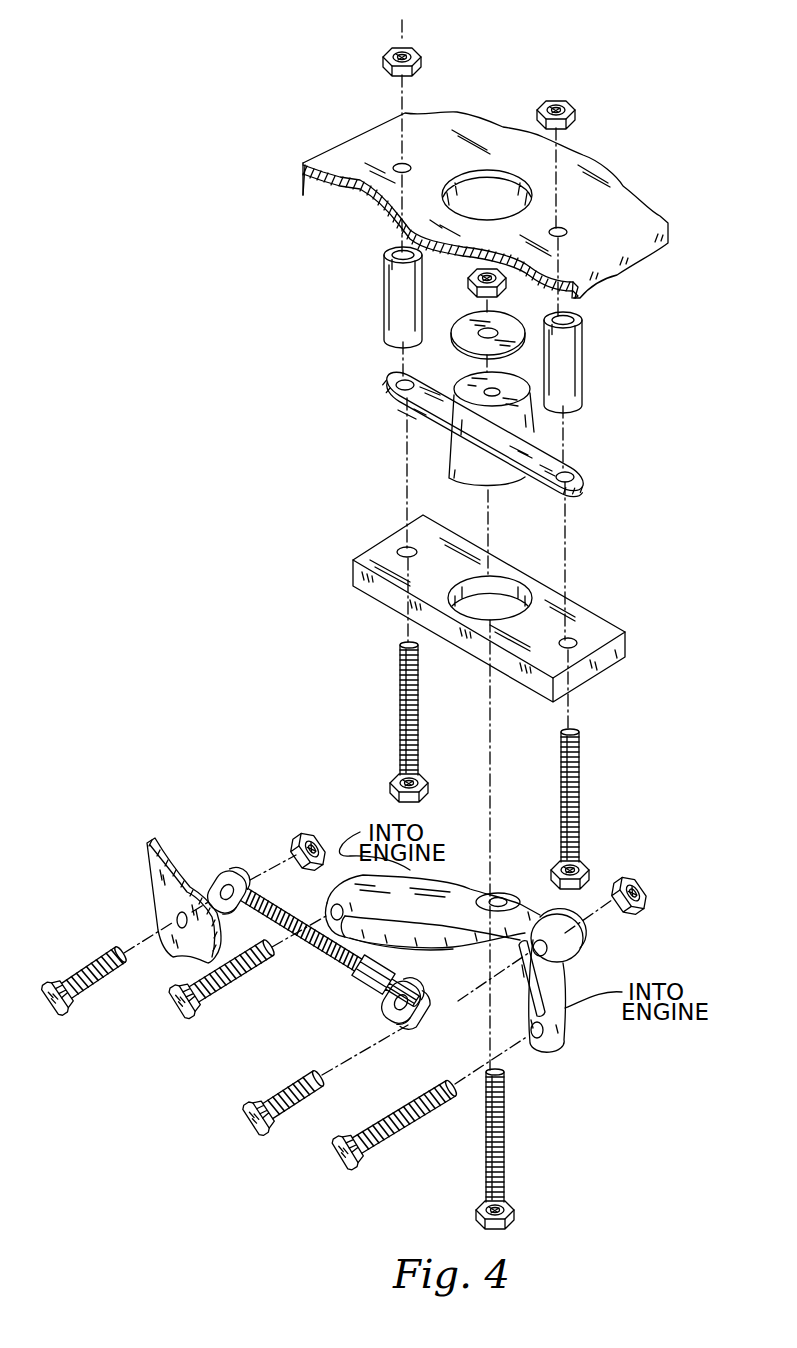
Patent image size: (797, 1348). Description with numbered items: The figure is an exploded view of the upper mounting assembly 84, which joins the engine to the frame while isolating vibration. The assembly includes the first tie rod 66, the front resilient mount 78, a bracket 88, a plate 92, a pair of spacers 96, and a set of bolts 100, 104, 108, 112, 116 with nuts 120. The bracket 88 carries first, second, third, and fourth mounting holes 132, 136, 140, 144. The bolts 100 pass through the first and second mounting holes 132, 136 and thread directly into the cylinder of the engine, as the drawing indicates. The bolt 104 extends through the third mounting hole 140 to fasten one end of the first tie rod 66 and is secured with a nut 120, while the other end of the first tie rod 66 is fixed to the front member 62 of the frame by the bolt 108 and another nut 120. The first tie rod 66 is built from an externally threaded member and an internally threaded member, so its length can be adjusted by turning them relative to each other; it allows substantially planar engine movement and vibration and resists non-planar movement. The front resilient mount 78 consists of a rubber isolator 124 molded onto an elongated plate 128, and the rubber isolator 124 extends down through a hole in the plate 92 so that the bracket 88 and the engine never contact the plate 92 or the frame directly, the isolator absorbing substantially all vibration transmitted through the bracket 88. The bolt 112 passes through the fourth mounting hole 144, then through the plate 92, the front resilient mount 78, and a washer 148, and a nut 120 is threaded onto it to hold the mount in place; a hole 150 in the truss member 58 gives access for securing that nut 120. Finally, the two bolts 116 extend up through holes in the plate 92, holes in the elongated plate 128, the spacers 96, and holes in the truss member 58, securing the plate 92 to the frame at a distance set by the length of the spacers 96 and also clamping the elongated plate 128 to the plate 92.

The truss member 58 is at (660, 240).
The front member 62 is at (177, 887).
The first tie rod 66 is at (325, 958).
The front resilient mount 78 is at (437, 450).
The upper mounting assembly 84 is at (444, 433).
The bracket 88 is at (465, 895).
The plate 92 is at (605, 632).
The spacers 96 is at (395, 300).
The bolts 100 is at (178, 1020).
The bolt 104 is at (240, 1122).
The bolt 108 is at (65, 1012).
The bolt 112 is at (505, 1168).
The bolts 116 is at (400, 697).
The nuts 120 is at (415, 52).
The rubber isolator 124 is at (505, 432).
The elongated plate 128 is at (576, 478).
The first mounting hole 132 is at (545, 1050).
The second mounting hole 136 is at (392, 946).
The third mounting hole 140 is at (565, 967).
The fourth mounting hole 144 is at (500, 895).
The washer 148 is at (507, 330).
The hole 150 is at (487, 200).